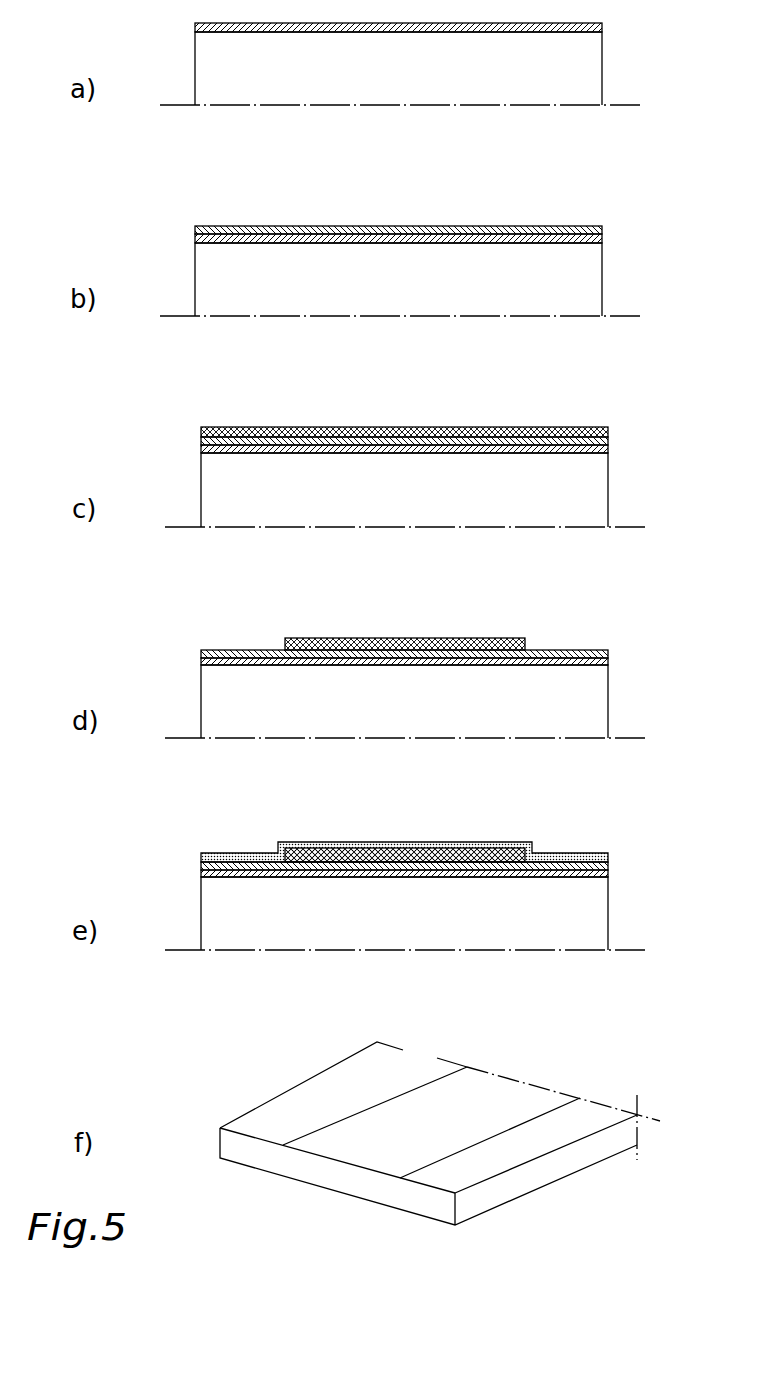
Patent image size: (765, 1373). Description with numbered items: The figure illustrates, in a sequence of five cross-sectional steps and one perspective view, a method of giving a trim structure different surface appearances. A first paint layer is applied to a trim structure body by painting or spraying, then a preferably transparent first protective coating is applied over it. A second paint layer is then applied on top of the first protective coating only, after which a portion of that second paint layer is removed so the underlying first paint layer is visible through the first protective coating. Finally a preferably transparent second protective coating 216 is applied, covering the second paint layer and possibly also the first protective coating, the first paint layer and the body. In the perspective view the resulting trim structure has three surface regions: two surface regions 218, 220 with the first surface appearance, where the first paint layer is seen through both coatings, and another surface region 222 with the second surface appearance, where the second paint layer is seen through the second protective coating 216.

The second protective coating 216 is at (494, 840).
The surface region 218 is at (333, 1103).
The surface region 220 is at (493, 1158).
The surface region 222 is at (383, 1137).